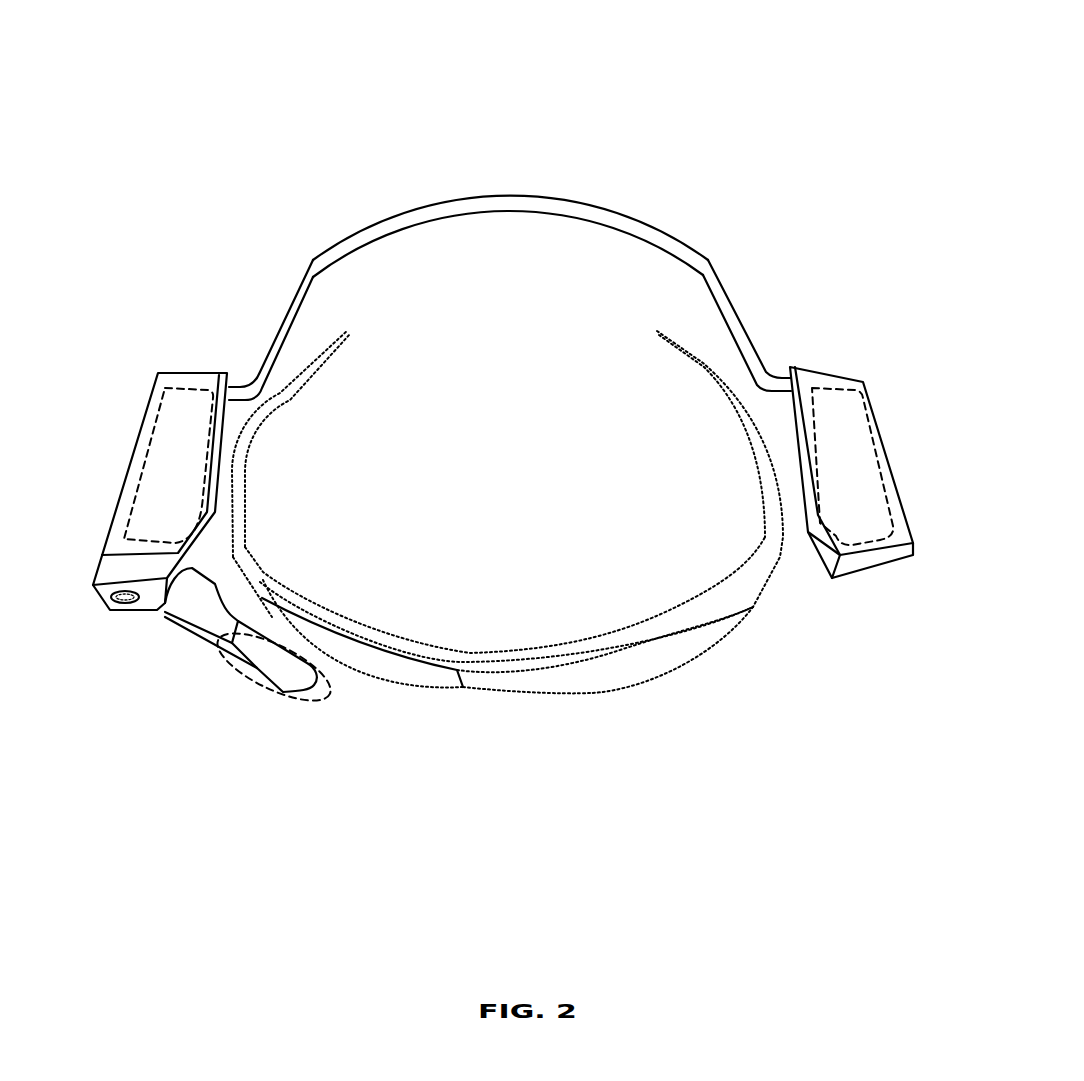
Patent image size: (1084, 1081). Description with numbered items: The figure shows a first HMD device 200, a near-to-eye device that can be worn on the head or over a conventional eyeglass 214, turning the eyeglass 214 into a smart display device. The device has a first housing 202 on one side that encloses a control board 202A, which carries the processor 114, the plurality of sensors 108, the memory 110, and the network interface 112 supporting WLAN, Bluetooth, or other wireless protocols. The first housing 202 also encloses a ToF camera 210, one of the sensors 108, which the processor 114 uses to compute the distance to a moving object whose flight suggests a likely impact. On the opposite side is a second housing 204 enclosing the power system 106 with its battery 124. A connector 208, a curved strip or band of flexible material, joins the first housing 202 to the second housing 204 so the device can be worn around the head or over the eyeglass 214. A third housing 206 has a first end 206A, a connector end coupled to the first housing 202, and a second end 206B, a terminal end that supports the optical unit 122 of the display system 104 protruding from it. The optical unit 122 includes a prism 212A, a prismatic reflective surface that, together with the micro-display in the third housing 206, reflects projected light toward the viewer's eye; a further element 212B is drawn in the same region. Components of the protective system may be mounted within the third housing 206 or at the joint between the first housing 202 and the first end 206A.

The first HMD device 200 is at (720, 60).
The connector 208 is at (520, 194).
The first housing 202 is at (137, 519).
The control board 202A is at (143, 457).
The processor 114 is at (152, 483).
The plurality of sensors 108 is at (150, 497).
The network interface 112 is at (153, 505).
The memory 110 is at (155, 513).
The ToF camera 210 is at (124, 606).
The second housing 204 is at (871, 472).
The power system 106 is at (873, 455).
The battery 124 is at (853, 505).
The eyeglass 214 is at (498, 647).
The third housing 206 is at (276, 697).
The first end 206A is at (165, 617).
The second end 206B is at (317, 682).
The display system 104 is at (242, 692).
The prism 212A is at (307, 688).
The electrode 212B is at (257, 669).
The optical unit 122 is at (284, 692).